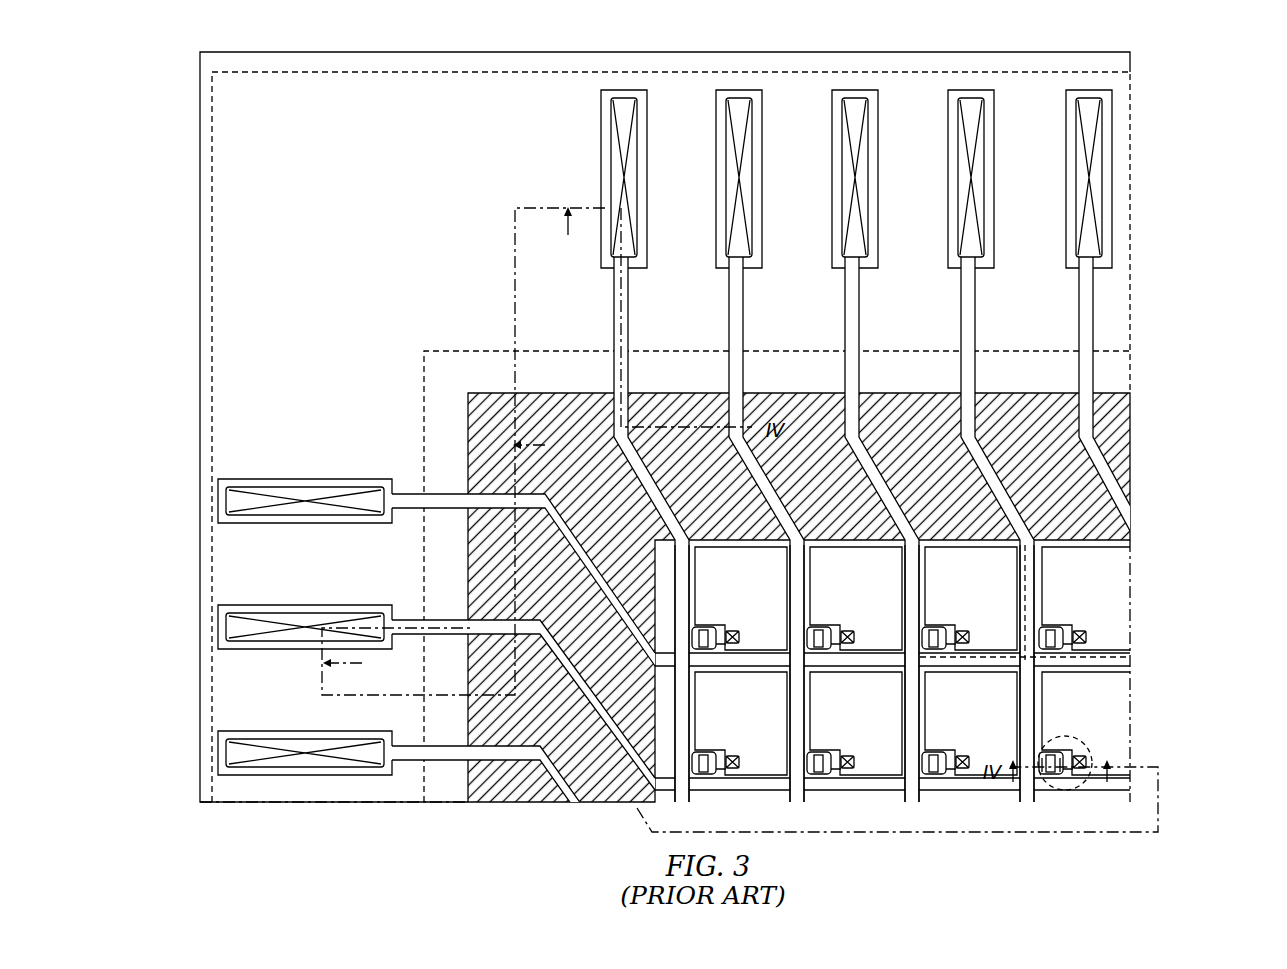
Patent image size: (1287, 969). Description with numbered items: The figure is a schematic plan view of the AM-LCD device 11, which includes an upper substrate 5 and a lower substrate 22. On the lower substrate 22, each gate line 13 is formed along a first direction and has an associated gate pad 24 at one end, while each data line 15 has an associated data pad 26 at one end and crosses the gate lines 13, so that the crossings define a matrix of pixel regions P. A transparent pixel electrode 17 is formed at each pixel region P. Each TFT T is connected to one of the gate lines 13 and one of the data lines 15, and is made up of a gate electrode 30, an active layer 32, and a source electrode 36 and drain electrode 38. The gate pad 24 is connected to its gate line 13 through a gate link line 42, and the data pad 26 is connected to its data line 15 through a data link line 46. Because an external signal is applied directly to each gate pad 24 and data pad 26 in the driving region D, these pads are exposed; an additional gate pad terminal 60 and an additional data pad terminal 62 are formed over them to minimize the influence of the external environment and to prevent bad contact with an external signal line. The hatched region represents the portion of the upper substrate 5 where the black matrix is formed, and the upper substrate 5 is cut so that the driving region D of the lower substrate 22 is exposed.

The lower substrate 22 is at (200, 190).
The driving region D is at (627, 72).
The upper substrate 5 is at (487, 393).
The gate line 13 is at (1135, 662).
The gate link line 42 is at (448, 490).
The data link line 46 is at (1102, 368).
The transparent pixel electrode 17 is at (1117, 790).
The additional data pad terminal 62 is at (1113, 110).
The data pad 26 is at (1105, 222).
The additional gate pad terminal 60 is at (357, 480).
The gate pad 24 is at (298, 487).
The data line 15 is at (1050, 572).
The pixel region P is at (1028, 598).
The TFT T is at (1082, 740).
The active layer 32 is at (1062, 778).
The source electrode 36 is at (1056, 778).
The gate electrode 30 is at (1053, 755).
The drain electrode 38 is at (1097, 752).
The AM-LCD device 11 is at (1200, 489).